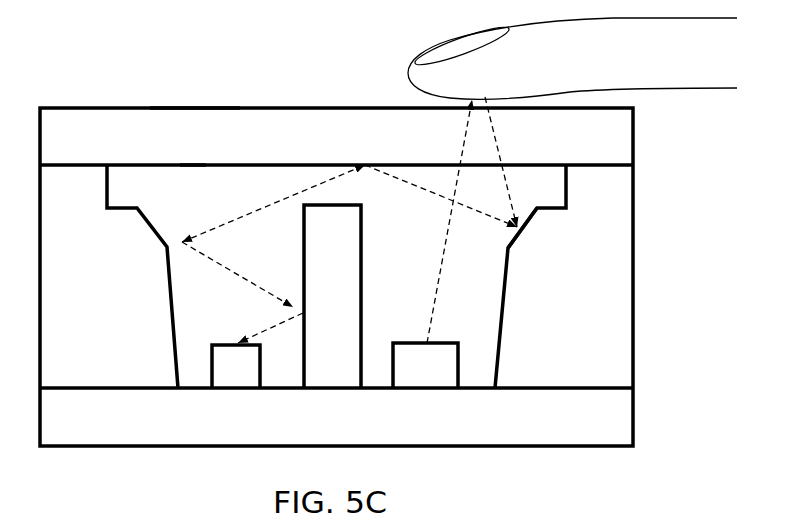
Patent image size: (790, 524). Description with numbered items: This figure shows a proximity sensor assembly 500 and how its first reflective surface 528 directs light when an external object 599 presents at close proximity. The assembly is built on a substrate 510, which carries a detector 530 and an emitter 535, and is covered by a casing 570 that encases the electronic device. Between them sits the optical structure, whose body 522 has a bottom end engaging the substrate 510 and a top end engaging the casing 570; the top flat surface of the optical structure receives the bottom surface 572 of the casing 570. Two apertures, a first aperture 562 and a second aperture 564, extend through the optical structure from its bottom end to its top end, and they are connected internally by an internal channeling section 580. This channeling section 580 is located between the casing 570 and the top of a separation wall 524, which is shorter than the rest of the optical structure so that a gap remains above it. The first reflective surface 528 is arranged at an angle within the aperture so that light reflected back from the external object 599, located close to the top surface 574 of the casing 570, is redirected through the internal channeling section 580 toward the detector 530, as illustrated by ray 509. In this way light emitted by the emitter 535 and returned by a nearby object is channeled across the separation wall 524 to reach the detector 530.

The proximity sensor assembly 500 is at (33, 85).
The ray 509 is at (498, 131).
The substrate 510 is at (399, 420).
The optical structure body 522 is at (89, 323).
The separation wall 524 is at (348, 301).
The first reflective surface 528 is at (507, 238).
The detector 530 is at (251, 376).
The emitter 535 is at (410, 373).
The first aperture 562 is at (238, 323).
The second aperture 564 is at (418, 301).
The casing 570 is at (90, 153).
The bottom surface 572 is at (193, 168).
The top surface 574 is at (191, 100).
The internal channeling section 580 is at (374, 198).
The external object 599 is at (547, 83).